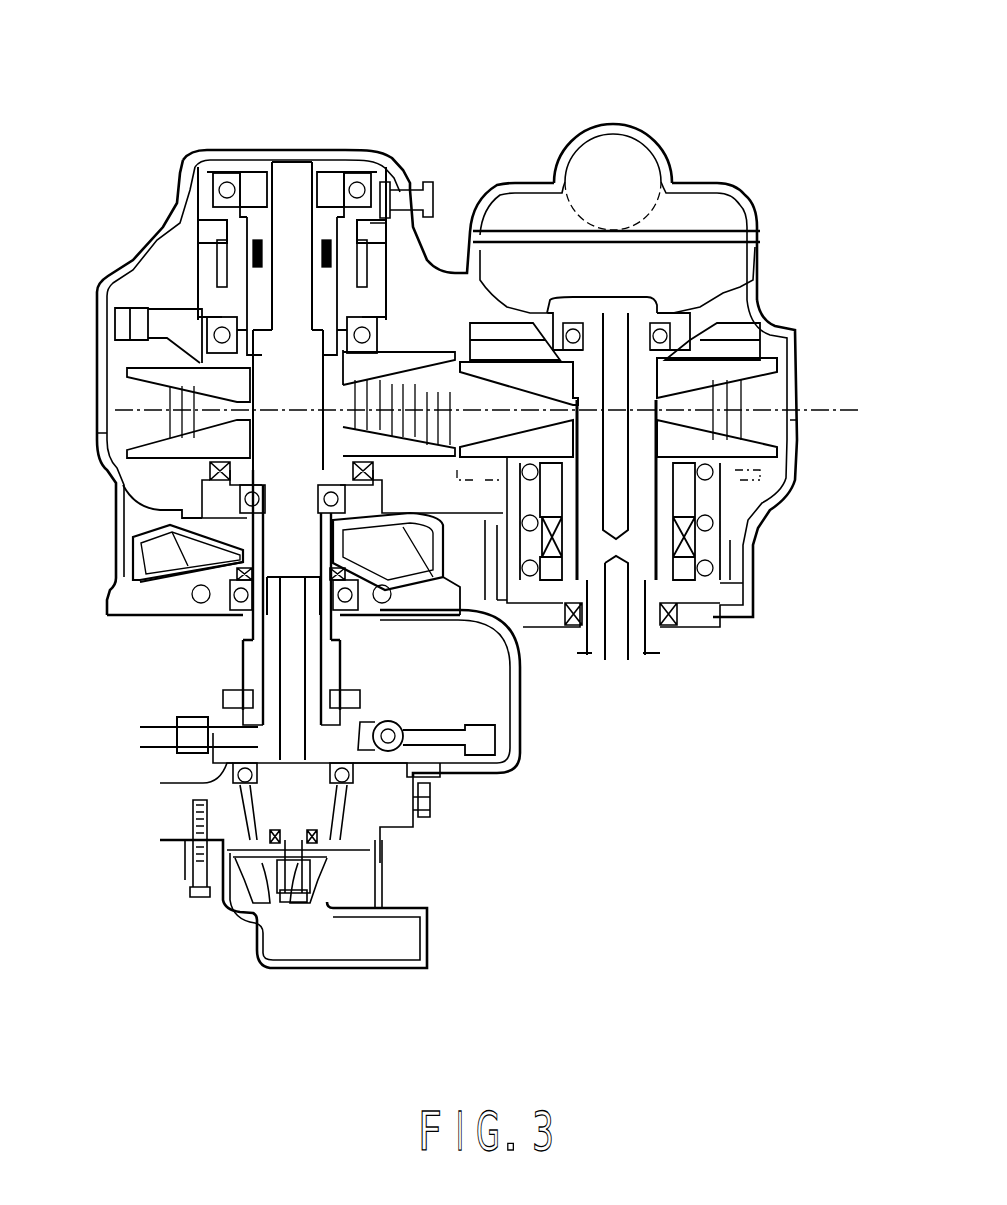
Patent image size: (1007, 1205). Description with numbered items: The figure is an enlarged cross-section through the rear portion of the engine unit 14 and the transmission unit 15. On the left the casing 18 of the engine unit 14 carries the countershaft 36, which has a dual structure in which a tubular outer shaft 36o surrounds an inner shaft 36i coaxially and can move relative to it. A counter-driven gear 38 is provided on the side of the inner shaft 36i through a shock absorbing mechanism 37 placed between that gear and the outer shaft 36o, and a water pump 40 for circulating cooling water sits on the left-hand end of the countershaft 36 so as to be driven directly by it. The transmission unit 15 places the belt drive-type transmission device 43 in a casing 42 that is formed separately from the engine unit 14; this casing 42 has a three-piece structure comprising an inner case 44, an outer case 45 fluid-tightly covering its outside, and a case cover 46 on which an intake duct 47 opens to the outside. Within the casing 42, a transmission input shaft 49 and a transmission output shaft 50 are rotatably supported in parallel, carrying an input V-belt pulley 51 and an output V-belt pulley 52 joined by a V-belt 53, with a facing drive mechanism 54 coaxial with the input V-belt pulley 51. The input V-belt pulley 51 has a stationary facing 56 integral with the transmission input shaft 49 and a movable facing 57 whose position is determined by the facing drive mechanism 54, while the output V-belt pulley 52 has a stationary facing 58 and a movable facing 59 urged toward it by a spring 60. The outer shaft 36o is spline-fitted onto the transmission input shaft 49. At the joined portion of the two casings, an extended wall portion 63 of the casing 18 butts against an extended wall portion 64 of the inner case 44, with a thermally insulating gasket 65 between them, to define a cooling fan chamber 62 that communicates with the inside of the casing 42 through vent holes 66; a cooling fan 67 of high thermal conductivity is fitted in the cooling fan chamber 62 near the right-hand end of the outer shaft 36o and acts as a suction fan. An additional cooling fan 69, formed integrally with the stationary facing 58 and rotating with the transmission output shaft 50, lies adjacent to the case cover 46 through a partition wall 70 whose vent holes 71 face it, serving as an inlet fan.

The engine unit 14 is at (524, 765).
The transmission unit 15 is at (618, 118).
The casing 18 is at (520, 703).
The countershaft 36 is at (137, 623).
The inner shaft 36i is at (268, 632).
The outer shaft 36o is at (260, 668).
The shock absorbing mechanism 37 is at (386, 716).
The counter-driven gear 38 is at (437, 727).
The water pump 40 is at (258, 943).
The casing 42 is at (850, 205).
The belt drive-type transmission device 43 is at (560, 100).
The inner case 44 is at (800, 450).
The outer case 45 is at (797, 328).
The case cover 46 is at (766, 214).
The intake duct 47 is at (632, 178).
The transmission input shaft 49 is at (288, 180).
The transmission output shaft 50 is at (608, 316).
The input V-belt pulley 51 is at (162, 360).
The output V-belt pulley 52 is at (592, 322).
The V-belt 53 is at (88, 332).
The facing drive mechanism 54 is at (392, 260).
The stationary facing 56 is at (433, 450).
The movable facing 57 is at (422, 352).
The stationary facing 58 is at (507, 387).
The movable facing 59 is at (488, 450).
The spring 60 is at (712, 522).
The cooling fan chamber 62 is at (190, 538).
The extended wall portion 63 is at (113, 588).
The extended wall portion 64 is at (130, 540).
The gasket 65 is at (118, 578).
The vent holes 66 is at (192, 510).
The cooling fan 67 is at (150, 560).
The cooling fan 69 is at (768, 333).
The partition wall 70 is at (740, 315).
The vent holes 71 is at (707, 316).